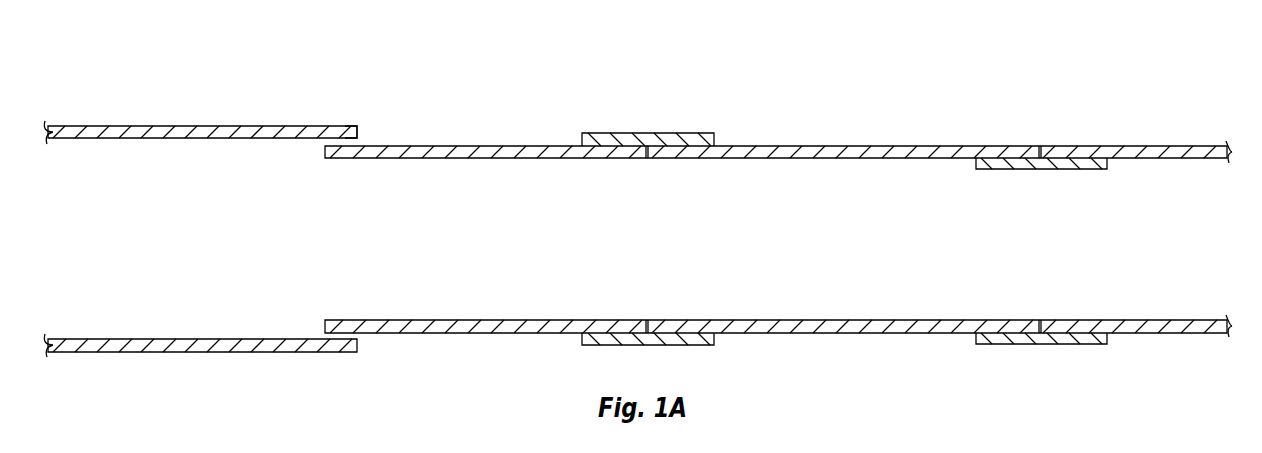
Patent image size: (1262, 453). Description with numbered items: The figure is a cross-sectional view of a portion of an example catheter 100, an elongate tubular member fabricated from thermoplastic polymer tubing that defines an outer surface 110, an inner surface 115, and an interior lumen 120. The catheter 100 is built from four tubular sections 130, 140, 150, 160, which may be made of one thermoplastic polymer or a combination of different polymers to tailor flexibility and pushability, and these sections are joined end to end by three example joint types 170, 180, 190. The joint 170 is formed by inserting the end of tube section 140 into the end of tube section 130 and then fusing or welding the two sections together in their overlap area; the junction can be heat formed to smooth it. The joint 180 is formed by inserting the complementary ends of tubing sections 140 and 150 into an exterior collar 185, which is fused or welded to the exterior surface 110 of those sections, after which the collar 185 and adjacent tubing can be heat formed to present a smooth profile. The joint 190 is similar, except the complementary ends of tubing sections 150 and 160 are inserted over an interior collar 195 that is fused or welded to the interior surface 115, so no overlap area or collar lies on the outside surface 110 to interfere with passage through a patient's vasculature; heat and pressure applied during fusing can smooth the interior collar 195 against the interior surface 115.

The catheter 100 is at (615, 70).
The outer surface 110 is at (880, 334).
The inner surface 115 is at (868, 320).
The interior lumen 120 is at (669, 247).
The tubular section 130 is at (183, 132).
The tubular section 140 is at (463, 150).
The tubular section 150 is at (851, 150).
The tubular section 160 is at (1151, 151).
The joint 170 is at (353, 128).
The joint 180 is at (647, 162).
The exterior collar 185 is at (688, 139).
The joint 190 is at (1040, 153).
The interior collar 195 is at (1003, 169).